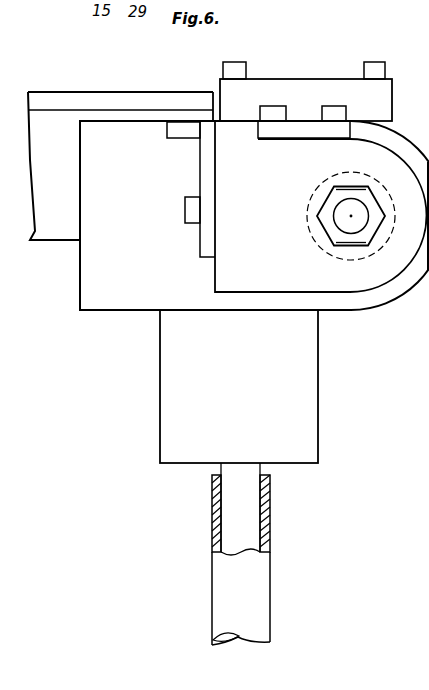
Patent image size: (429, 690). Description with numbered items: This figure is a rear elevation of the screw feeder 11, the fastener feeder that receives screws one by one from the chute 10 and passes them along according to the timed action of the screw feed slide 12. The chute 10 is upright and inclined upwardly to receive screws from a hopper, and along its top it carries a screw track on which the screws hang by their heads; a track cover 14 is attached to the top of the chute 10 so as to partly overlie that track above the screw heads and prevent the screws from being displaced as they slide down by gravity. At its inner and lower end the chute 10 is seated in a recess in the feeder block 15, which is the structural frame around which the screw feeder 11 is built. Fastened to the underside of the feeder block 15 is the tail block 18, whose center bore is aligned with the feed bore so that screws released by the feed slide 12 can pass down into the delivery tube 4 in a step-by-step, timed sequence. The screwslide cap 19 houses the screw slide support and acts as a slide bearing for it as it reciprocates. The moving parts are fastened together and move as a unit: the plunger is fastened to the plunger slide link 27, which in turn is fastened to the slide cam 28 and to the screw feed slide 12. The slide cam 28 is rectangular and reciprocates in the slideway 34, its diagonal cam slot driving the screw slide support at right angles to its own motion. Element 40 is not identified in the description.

The delivery tube 4 is at (212, 577).
The chute 10 is at (60, 157).
The screw feeder 11 is at (197, 79).
The screw feed slide 12 is at (203, 174).
The track cover 14 is at (53, 100).
The feeder block 15 is at (87, 272).
The tail block 18 is at (160, 416).
The screwslide cap 19 is at (298, 82).
The plunger slide link 27 is at (368, 280).
The slide cam 28 is at (290, 131).
The slideway 34 is at (310, 140).
The stop member 40 is at (167, 134).